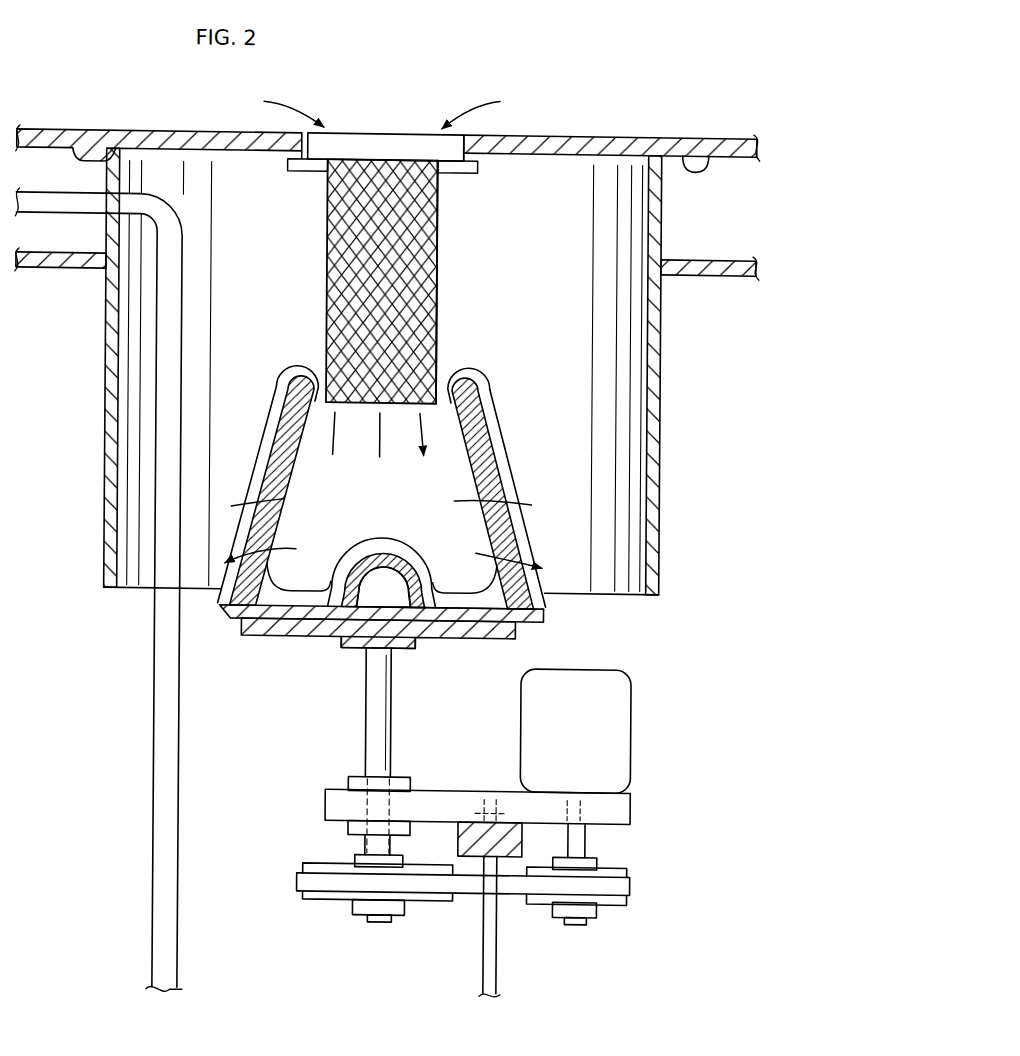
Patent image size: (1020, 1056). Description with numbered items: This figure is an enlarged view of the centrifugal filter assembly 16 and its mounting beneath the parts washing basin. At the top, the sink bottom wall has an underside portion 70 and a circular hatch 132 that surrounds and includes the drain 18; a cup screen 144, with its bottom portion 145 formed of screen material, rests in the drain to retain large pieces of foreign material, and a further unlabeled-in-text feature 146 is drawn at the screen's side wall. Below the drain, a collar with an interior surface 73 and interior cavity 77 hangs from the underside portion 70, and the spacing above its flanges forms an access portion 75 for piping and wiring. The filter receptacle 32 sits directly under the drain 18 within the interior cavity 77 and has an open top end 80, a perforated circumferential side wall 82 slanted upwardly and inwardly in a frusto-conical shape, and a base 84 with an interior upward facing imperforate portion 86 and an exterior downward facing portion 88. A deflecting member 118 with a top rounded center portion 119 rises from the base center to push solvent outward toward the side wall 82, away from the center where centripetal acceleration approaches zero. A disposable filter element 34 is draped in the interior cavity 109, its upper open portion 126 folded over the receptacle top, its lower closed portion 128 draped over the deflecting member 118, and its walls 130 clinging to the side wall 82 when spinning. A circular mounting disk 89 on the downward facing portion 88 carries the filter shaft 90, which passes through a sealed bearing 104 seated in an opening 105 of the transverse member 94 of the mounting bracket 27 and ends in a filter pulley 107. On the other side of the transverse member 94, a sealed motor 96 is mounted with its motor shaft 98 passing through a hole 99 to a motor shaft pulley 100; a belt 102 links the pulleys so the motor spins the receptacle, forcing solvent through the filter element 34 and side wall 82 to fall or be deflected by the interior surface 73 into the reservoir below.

The centrifugal filter assembly 16 is at (243, 740).
The drain 18 is at (401, 128).
The mounting bracket 27 is at (439, 798).
The filter receptacle 32 is at (497, 443).
The disposable filter element 34 is at (488, 402).
The underside portion 70 is at (735, 153).
The interior surface 73 is at (634, 358).
The access portion 75 is at (661, 230).
The interior cavity 77 is at (193, 321).
The open top end 80 is at (448, 376).
The perforated circumferential side wall 82 is at (505, 481).
The base 84 is at (226, 618).
The interior upward facing imperforate portion 86 is at (262, 621).
The exterior downward facing portion 88 is at (482, 636).
The circular mounting disk 89 is at (278, 634).
The filter shaft 90 is at (368, 703).
The transverse member 94 is at (499, 797).
The sealed motor 96 is at (633, 720).
The motor shaft 98 is at (590, 840).
The hole 99 is at (580, 808).
The motor shaft pulley 100 is at (636, 902).
The belt 102 is at (512, 895).
The sealed bearing 104 is at (352, 783).
The opening 105 is at (375, 807).
The filter pulley 107 is at (418, 903).
The interior cavity 109 is at (401, 507).
The deflecting member 118 is at (373, 542).
The top rounded center portion 119 is at (376, 588).
The upper open portion 126 is at (446, 370).
The lower closed portion 128 is at (537, 610).
The walls 130 is at (278, 448).
The hatch 132 is at (612, 134).
The cup screen 144 is at (326, 232).
The bottom portion 145 is at (397, 407).
The filter surface 146 is at (442, 209).